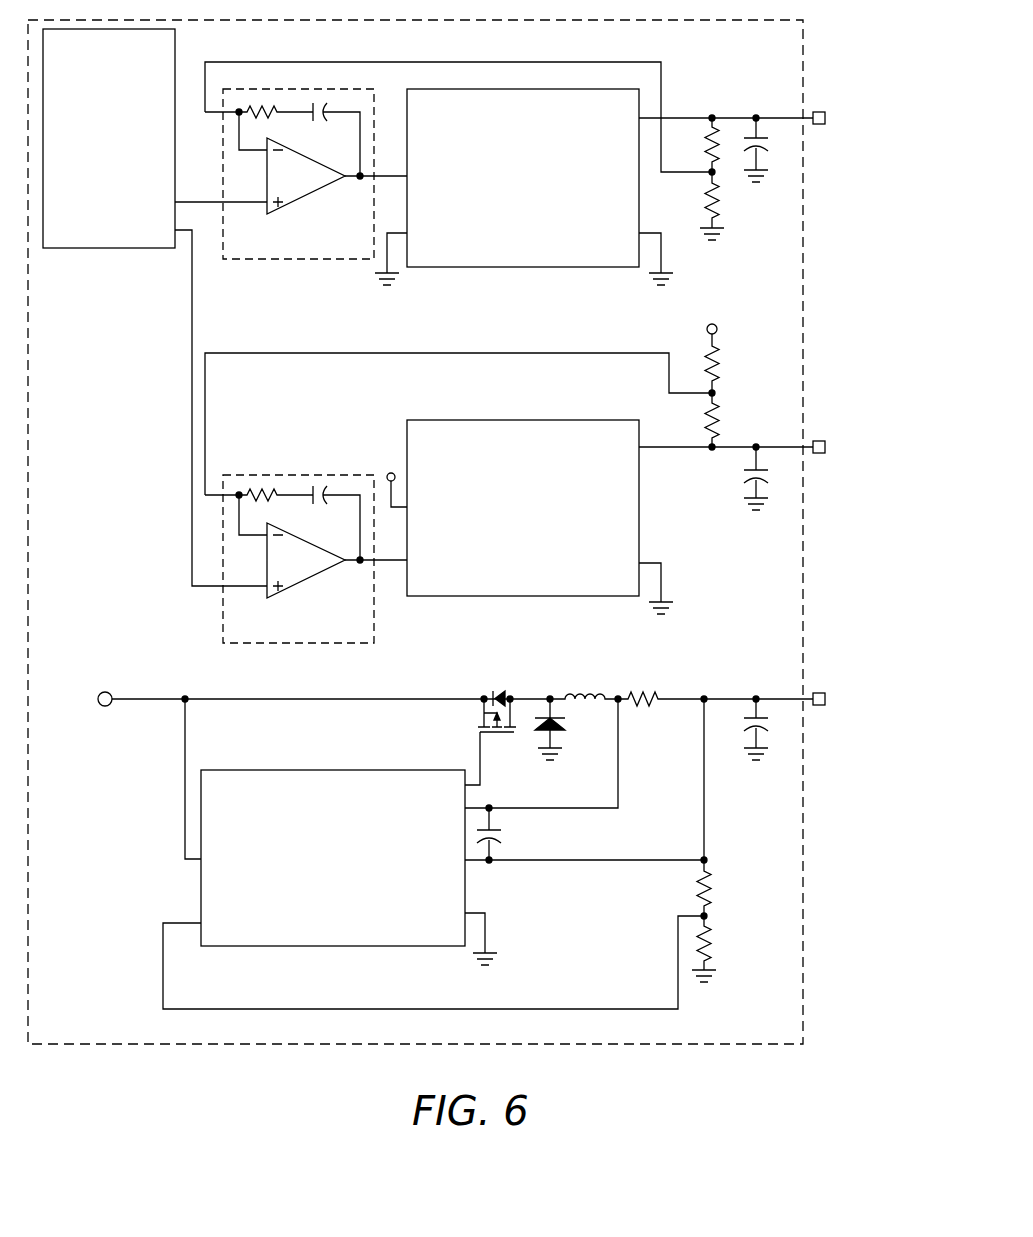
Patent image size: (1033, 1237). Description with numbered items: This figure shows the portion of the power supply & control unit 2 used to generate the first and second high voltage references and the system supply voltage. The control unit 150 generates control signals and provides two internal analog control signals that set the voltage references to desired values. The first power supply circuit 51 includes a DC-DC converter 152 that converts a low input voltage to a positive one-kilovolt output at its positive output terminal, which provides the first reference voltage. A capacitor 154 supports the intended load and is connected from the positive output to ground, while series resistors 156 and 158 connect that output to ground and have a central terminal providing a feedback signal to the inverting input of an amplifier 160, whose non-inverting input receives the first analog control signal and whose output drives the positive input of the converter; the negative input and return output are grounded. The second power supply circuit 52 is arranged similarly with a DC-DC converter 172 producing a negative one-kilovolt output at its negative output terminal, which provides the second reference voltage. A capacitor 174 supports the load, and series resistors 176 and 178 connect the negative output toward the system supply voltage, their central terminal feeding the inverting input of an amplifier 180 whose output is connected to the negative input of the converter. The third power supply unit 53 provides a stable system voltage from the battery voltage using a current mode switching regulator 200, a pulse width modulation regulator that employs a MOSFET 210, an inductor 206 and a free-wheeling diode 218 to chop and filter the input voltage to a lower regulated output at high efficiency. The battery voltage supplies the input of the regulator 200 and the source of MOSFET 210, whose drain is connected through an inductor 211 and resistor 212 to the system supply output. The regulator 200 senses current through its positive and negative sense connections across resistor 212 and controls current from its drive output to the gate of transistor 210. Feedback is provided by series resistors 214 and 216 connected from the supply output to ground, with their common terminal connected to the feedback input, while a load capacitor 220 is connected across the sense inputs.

The power supply & control unit 2 is at (415, 532).
The first power supply circuit 51 is at (694, 74).
The second power supply circuit 52 is at (746, 328).
The third power supply unit 53 is at (746, 827).
The control unit 150 is at (172, 51).
The DC-DC converter 152 is at (448, 113).
The capacitor 154 is at (776, 137).
The resistor 156 is at (709, 143).
The resistor 158 is at (718, 195).
The amplifier 160 is at (364, 246).
The DC-DC converter 172 is at (448, 443).
The capacitor 174 is at (743, 470).
The resistor 176 is at (714, 388).
The resistor 178 is at (716, 436).
The amplifier 180 is at (364, 630).
The current mode switching regulator 200 is at (353, 940).
The inductor 206 is at (566, 723).
The MOSFET 210 is at (478, 705).
The inductor 211 is at (582, 692).
The resistor 212 is at (645, 692).
The resistor 214 is at (709, 890).
The resistor 216 is at (712, 951).
The free-wheeling diode 218 is at (745, 727).
The load capacitor 220 is at (505, 833).